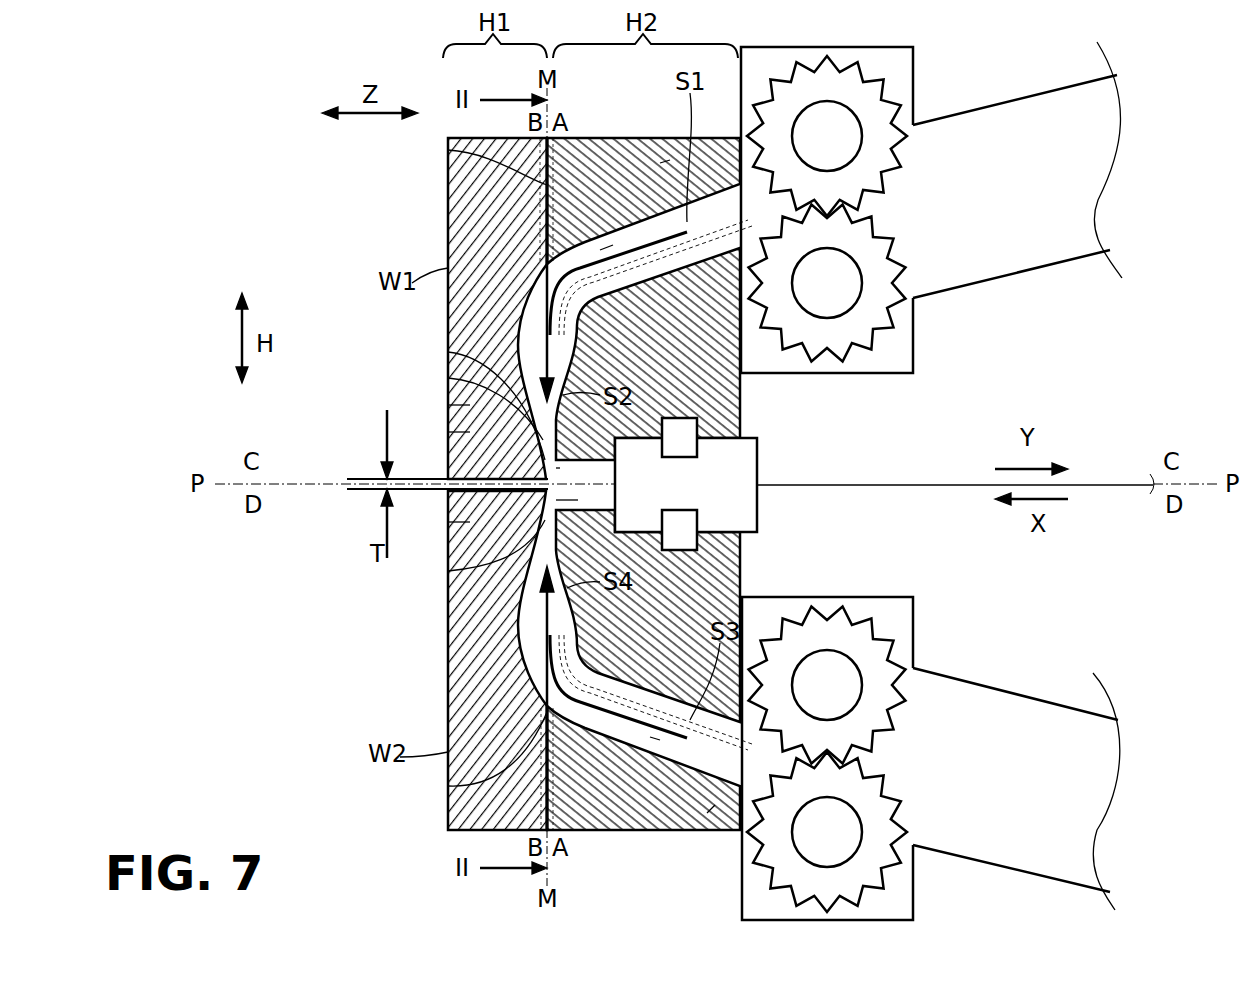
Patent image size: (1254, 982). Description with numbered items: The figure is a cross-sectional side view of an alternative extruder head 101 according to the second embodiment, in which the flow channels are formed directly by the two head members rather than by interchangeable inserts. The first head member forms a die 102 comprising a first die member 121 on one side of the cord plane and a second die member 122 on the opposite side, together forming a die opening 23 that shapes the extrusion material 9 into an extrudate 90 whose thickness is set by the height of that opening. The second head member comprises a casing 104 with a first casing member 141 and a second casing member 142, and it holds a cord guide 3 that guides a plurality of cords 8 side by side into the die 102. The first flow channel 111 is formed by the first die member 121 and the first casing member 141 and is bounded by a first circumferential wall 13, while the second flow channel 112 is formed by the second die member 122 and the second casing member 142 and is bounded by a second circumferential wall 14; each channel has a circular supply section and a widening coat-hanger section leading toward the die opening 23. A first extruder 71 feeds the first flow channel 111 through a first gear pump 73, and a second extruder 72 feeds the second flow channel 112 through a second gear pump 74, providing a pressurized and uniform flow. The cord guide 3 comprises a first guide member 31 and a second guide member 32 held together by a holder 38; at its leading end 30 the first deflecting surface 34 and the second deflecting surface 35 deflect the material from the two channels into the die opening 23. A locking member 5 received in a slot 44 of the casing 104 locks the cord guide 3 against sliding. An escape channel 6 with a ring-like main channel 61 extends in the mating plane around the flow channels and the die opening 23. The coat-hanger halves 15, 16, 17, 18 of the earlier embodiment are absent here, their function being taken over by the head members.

The alternative extruder head 101 is at (285, 156).
The escape channel 6 is at (448, 150).
The main channel 61 is at (448, 786).
The die 102 is at (448, 200).
The first die member 121 is at (448, 240).
The second coat-hanger half 16 is at (448, 352).
The first coat-hanger half 15 is at (448, 378).
The leading end 30 is at (448, 405).
The die opening 23 is at (448, 432).
The extrudate 90 is at (347, 479).
The first coat-hanger half 17 is at (448, 522).
The second coat-hanger half 18 is at (448, 571).
The second die member 122 is at (448, 688).
The casing 104 is at (587, 830).
The second circumferential wall 14 is at (613, 830).
The second flow channel 112 is at (660, 740).
The second casing member 142 is at (707, 813).
The first circumferential wall 13 is at (590, 237).
The first flow channel 111 is at (613, 245).
The first casing member 141 is at (660, 163).
The extrusion material 9 is at (727, 226).
The cord guide 3 is at (640, 438).
The slot 44 is at (700, 418).
The first guide member 31 is at (598, 460).
The first deflecting surface 34 is at (560, 468).
The second deflecting surface 35 is at (578, 500).
The locking member 5 is at (697, 450).
The holder 38 is at (757, 466).
The cords 8 is at (878, 484).
The second guide member 32 is at (596, 532).
The first gear pump 73 is at (903, 50).
The first extruder 71 is at (1012, 100).
The second extruder 72 is at (1016, 783).
The second gear pump 74 is at (897, 860).